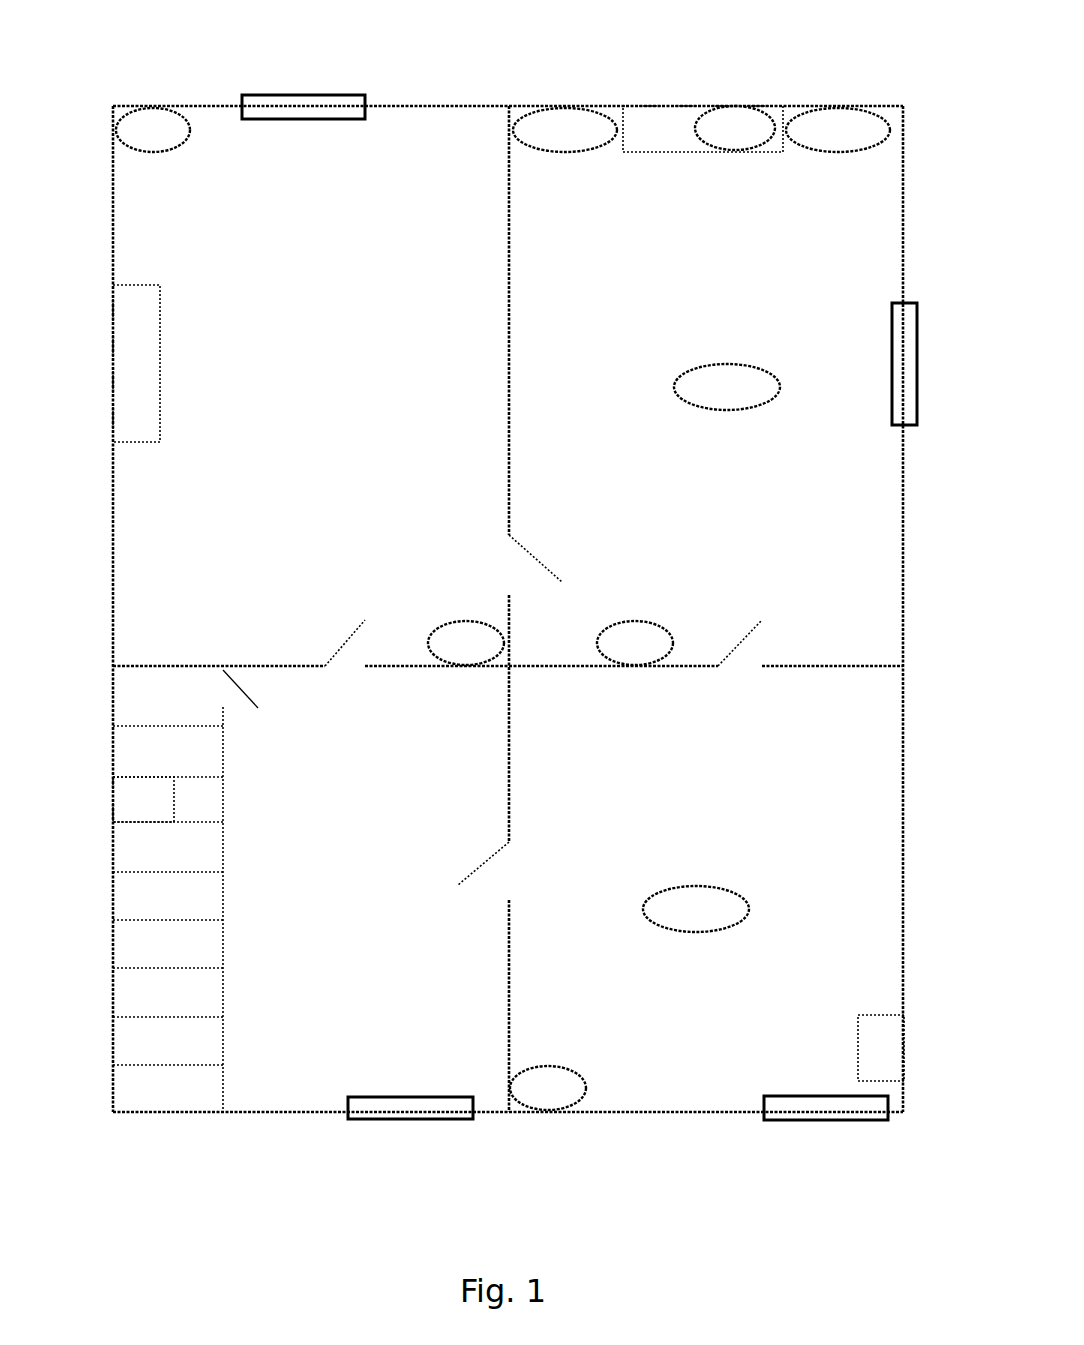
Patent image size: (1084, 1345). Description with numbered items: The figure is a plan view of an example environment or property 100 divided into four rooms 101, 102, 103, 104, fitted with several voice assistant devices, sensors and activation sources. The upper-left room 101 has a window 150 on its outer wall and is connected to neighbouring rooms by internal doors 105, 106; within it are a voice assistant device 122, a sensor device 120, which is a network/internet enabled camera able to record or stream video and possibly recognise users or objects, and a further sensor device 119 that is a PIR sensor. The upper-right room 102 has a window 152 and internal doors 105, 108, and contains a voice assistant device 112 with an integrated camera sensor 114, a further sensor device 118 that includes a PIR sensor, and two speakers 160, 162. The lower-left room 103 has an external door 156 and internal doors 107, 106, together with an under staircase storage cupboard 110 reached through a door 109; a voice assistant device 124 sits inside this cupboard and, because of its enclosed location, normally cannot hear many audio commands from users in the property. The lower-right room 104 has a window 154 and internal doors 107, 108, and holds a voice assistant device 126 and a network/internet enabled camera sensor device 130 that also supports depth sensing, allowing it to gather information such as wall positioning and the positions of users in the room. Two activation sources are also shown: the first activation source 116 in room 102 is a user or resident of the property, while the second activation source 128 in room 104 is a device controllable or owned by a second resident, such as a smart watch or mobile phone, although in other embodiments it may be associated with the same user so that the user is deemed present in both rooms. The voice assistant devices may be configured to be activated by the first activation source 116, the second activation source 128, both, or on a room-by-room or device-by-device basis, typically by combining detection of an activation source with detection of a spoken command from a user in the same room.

The environment or property 100 is at (84, 70).
The room 101 is at (456, 120).
The room 102 is at (905, 210).
The room 103 is at (302, 1095).
The room 104 is at (705, 1093).
The internal door 105 is at (492, 565).
The internal door 106 is at (357, 607).
The internal door 107 is at (475, 853).
The internal door 108 is at (755, 607).
The door 109 is at (222, 685).
The under staircase storage cupboard 110 is at (120, 705).
The voice assistant device 112 is at (643, 152).
The integrated sensor 114 is at (735, 150).
The activation source 116 is at (767, 405).
The sensor device 118 is at (652, 620).
The sensor device 119 is at (445, 620).
The sensor device 120 is at (178, 150).
The voice assistant device 122 is at (160, 330).
The voice assistant device 124 is at (118, 803).
The voice assistant device 126 is at (858, 1017).
The activation source 128 is at (733, 928).
The camera sensor device 130 is at (565, 1067).
The window W2 150 is at (325, 120).
The window W1 152 is at (890, 338).
The window W3 154 is at (843, 1093).
The window W4 156 is at (427, 1095).
The speaker 160 is at (565, 152).
The speaker 162 is at (843, 152).